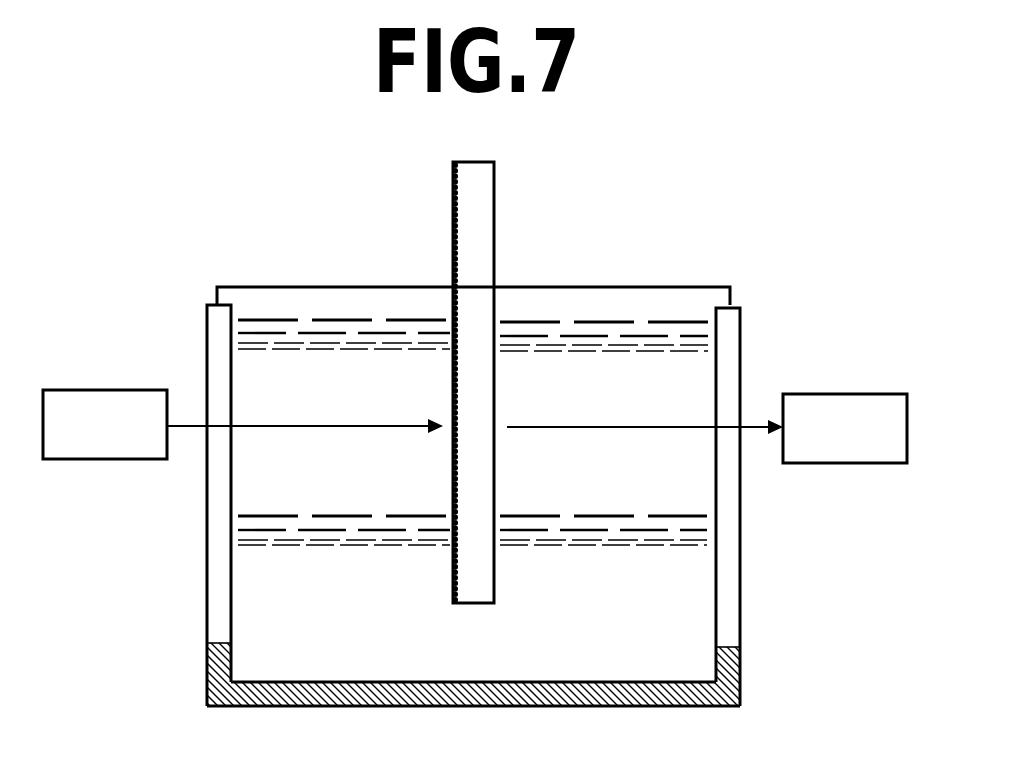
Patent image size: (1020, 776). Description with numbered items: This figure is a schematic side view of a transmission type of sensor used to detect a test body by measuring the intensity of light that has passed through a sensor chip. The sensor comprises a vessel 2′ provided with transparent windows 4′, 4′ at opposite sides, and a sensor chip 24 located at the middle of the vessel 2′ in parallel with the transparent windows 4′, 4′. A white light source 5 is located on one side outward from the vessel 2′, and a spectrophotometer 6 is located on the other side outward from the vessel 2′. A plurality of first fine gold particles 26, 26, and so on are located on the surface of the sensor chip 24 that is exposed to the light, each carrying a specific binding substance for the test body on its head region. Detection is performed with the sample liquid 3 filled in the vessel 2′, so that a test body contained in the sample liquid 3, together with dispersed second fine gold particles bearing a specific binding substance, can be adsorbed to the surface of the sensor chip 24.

The vessel 2′ is at (728, 680).
The transparent windows 4′ is at (217, 605).
The sample liquid 3 is at (692, 515).
The sensor chip 24 is at (494, 195).
The first fine gold particles 26 is at (453, 230).
The white light source 5 is at (103, 390).
The spectrophotometer 6 is at (838, 394).